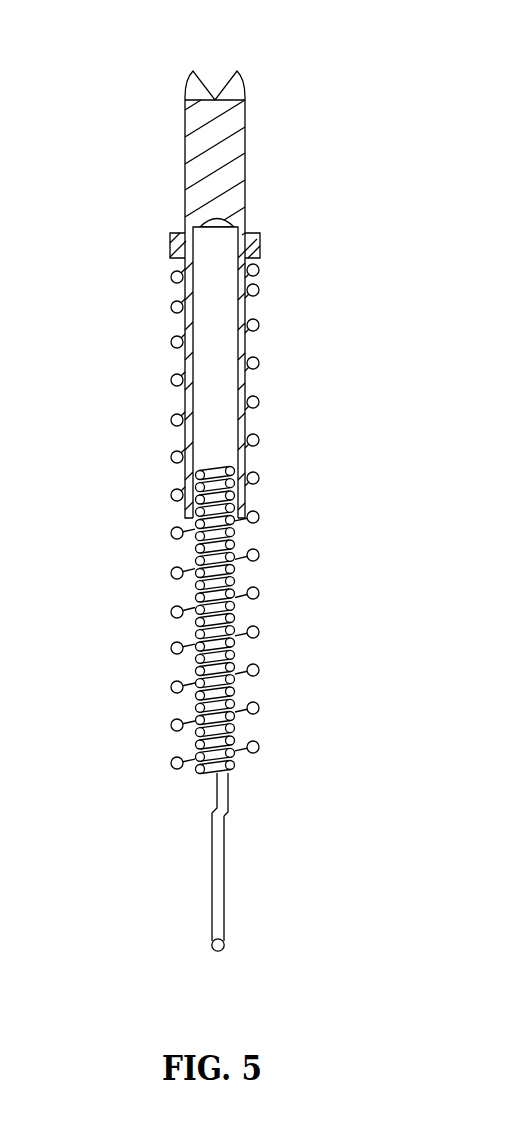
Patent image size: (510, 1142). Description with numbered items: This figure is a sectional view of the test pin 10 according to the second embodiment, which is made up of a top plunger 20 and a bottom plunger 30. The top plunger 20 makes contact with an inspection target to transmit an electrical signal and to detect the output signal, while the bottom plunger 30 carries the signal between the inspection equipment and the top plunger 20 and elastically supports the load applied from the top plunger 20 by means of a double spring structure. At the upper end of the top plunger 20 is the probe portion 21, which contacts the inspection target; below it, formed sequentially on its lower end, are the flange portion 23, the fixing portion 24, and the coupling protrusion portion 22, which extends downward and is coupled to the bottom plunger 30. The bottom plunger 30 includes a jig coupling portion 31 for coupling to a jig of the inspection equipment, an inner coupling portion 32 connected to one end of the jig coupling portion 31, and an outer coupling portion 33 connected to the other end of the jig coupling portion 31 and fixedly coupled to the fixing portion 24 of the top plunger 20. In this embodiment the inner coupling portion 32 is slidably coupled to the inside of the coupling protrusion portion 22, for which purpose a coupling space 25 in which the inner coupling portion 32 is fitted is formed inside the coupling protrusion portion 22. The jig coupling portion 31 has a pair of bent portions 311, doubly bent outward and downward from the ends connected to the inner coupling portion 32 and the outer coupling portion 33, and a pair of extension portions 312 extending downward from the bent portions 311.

The test pin 10 is at (297, 41).
The top plunger 20 is at (162, 150).
The probe portion 21 is at (245, 150).
The coupling protrusion portion 22 is at (243, 345).
The flange portion 23 is at (260, 246).
The fixing portion 24 is at (243, 281).
The coupling space 25 is at (243, 368).
The bottom plunger 30 is at (141, 670).
The jig coupling portion 31 is at (300, 862).
The bent portions 311 is at (228, 797).
The extension portions 312 is at (224, 860).
The inner coupling portion 32 is at (232, 650).
The outer coupling portion 33 is at (253, 553).